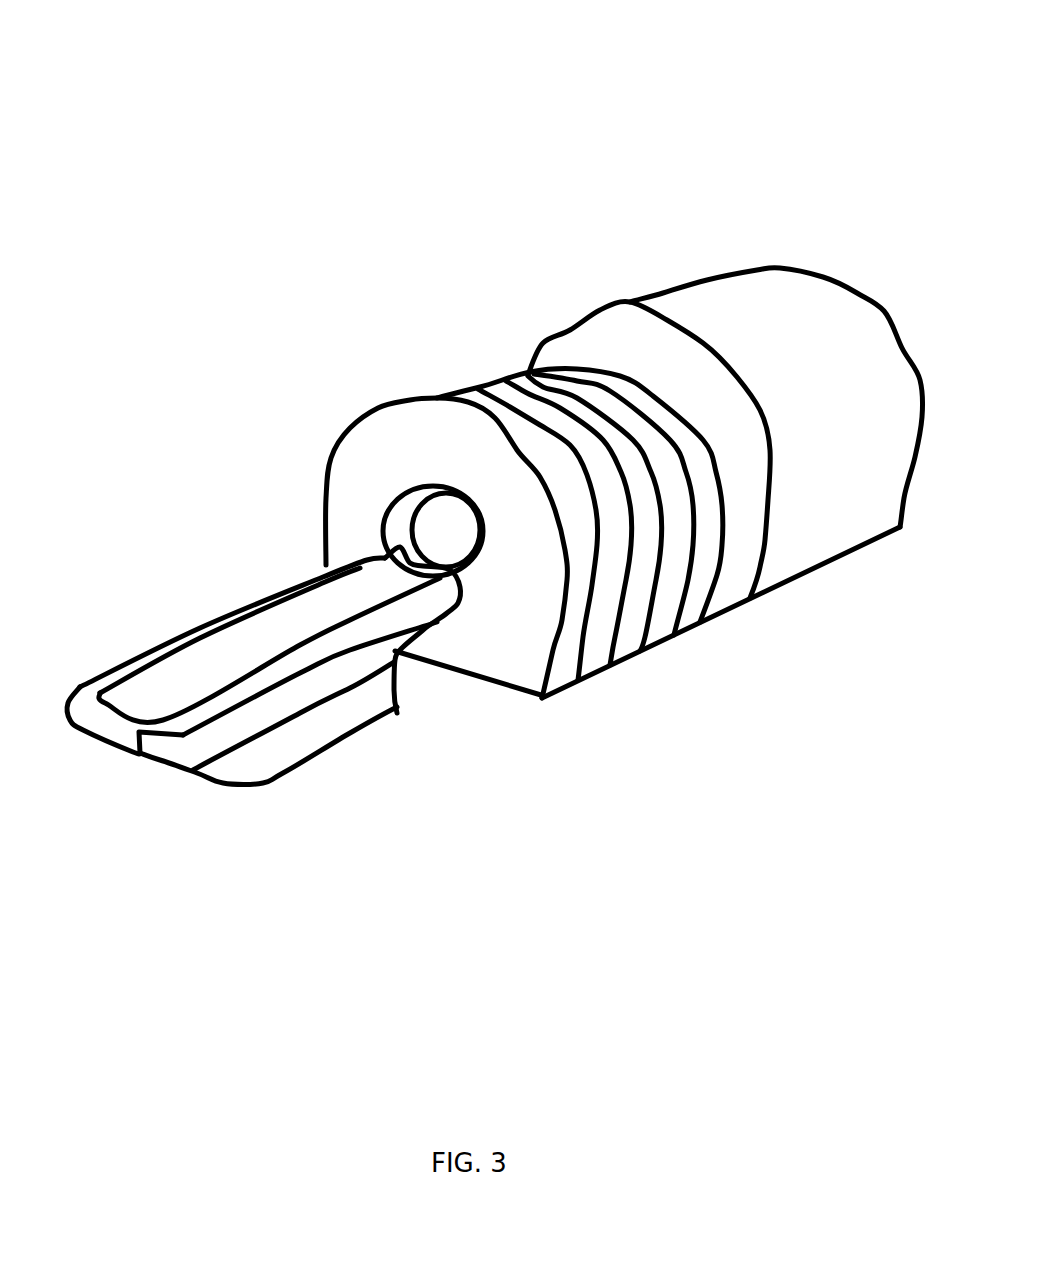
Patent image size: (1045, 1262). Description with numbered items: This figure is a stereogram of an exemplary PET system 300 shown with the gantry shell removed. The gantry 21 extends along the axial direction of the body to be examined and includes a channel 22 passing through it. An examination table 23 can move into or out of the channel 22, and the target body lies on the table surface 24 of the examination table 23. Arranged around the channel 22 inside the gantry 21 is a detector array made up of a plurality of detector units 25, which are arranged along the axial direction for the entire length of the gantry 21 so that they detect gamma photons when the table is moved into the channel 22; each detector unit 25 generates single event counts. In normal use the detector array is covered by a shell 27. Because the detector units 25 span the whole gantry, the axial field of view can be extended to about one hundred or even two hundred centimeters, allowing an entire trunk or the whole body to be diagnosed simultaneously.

The connector assembly 300 is at (485, 441).
The gantry 21 is at (472, 653).
The channel 22 is at (440, 528).
The examination table 23 is at (253, 758).
The table surface 24 is at (210, 658).
The detector unit 25 is at (558, 672).
The shell 27 is at (730, 308).